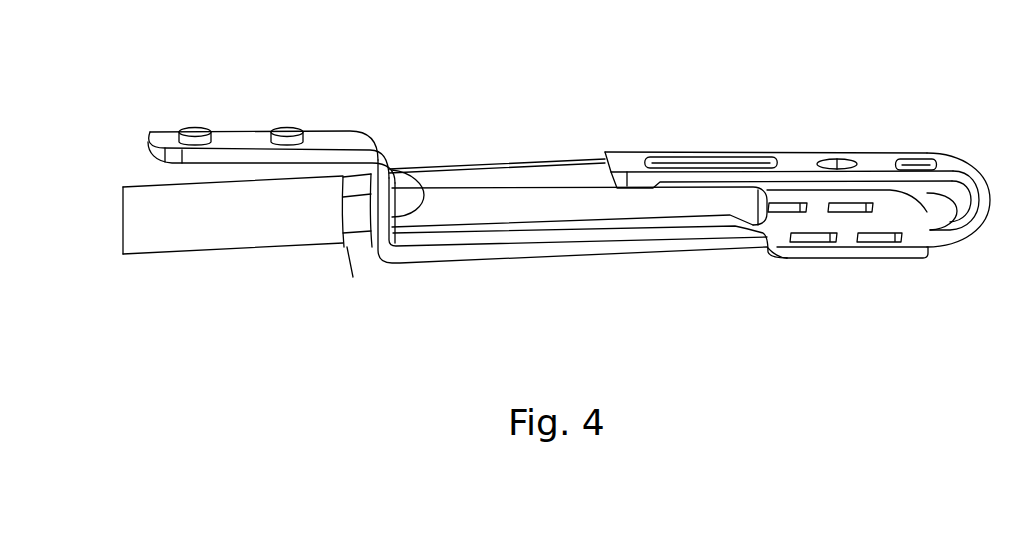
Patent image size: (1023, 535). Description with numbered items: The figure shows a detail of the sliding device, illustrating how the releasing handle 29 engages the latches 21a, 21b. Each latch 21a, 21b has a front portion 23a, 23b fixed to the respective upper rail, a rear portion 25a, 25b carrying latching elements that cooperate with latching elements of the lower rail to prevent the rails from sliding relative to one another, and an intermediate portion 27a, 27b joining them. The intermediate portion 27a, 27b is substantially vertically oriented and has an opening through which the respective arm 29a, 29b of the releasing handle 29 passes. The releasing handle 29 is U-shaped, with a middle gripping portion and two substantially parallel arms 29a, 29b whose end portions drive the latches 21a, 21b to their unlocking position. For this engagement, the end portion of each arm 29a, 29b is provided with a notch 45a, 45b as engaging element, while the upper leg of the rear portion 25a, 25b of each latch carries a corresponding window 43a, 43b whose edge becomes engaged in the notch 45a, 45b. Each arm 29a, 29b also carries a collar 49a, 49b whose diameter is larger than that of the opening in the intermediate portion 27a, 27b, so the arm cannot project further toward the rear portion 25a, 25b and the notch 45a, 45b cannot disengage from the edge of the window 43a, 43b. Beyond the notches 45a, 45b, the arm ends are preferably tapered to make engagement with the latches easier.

The releasing handle 29 is at (145, 170).
The arm 29a is at (155, 268).
The arm 29b is at (145, 255).
The collar 49a is at (365, 262).
The collar 49b is at (355, 248).
The front portion 23a is at (271, 110).
The front portion 23b is at (237, 130).
The intermediate portion 27a is at (572, 169).
The intermediate portion 27b is at (425, 168).
The notch 45a is at (589, 138).
The notch 45b is at (612, 177).
The window 43a is at (779, 125).
The window 43b is at (697, 157).
The rear portion 25a is at (935, 171).
The rear portion 25b is at (938, 124).
The latch 21a is at (887, 273).
The latch 21b is at (857, 268).